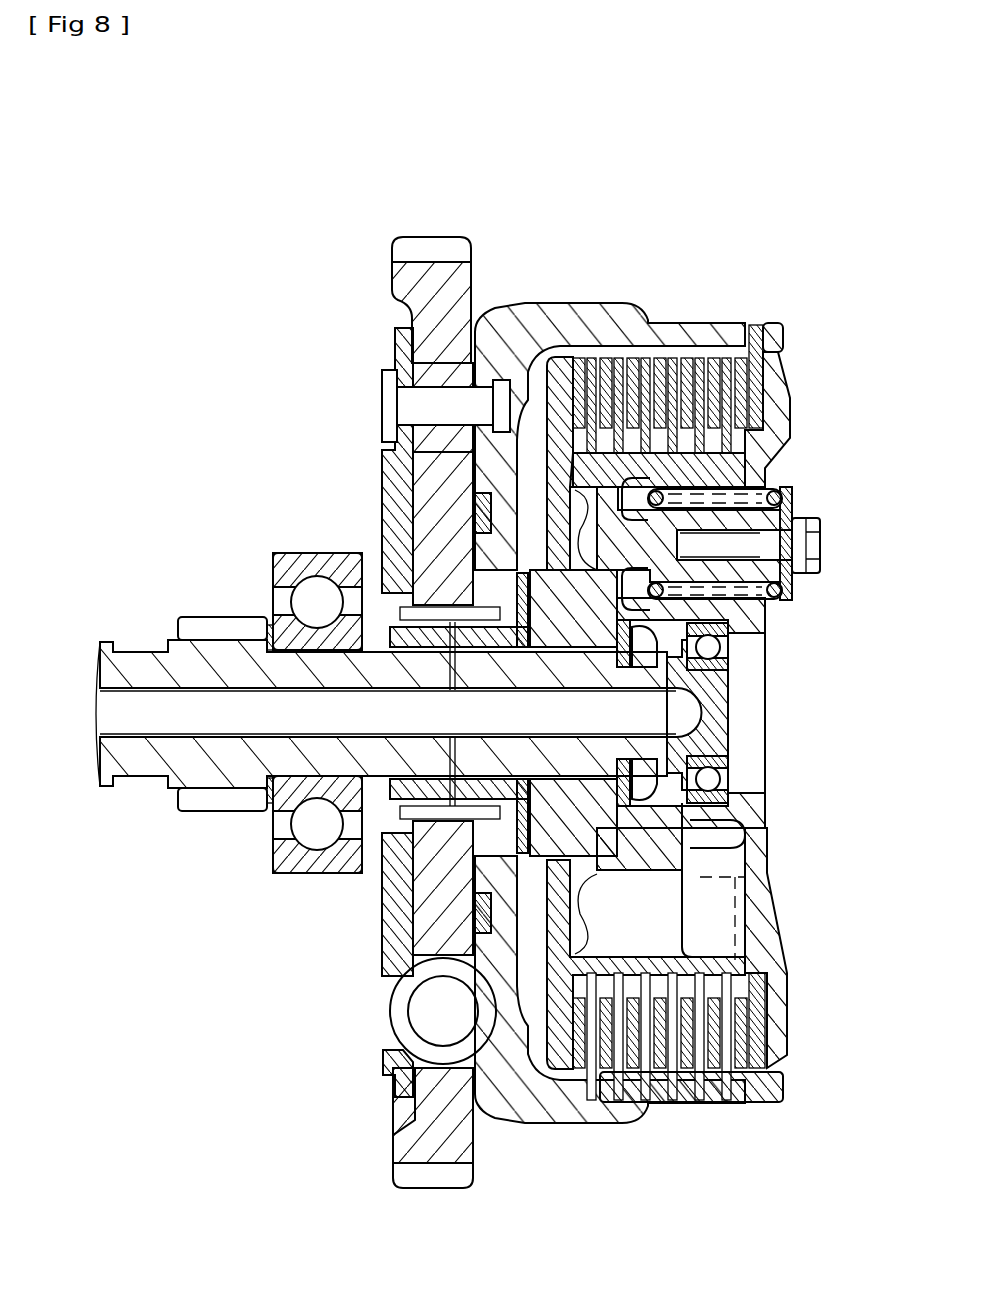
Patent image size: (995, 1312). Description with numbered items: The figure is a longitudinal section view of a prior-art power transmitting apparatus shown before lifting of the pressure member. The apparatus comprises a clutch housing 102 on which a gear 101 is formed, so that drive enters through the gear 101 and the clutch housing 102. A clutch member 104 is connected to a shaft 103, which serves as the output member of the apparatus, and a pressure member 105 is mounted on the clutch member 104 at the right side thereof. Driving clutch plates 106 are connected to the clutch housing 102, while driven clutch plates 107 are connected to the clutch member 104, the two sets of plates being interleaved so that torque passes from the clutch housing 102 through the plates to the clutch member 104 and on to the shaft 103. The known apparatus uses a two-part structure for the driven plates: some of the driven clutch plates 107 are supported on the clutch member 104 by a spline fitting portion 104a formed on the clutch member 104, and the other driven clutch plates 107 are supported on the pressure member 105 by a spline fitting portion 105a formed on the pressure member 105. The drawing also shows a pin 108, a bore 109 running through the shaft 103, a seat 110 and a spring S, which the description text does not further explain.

The gear 101 is at (407, 283).
The clutch housing 102 is at (560, 312).
The shaft 103 is at (140, 658).
The clutch member 104 is at (548, 448).
The spline fitting portion 104a is at (753, 896).
The pressure member 105 is at (784, 412).
The spline fitting portion 105a is at (728, 945).
The driving clutch plates 106 is at (685, 356).
The driven clutch plates 107 is at (616, 356).
The pin 108 is at (387, 390).
The shaft bore 109 is at (156, 720).
The spring seat 110 is at (730, 452).
The spring S is at (772, 606).